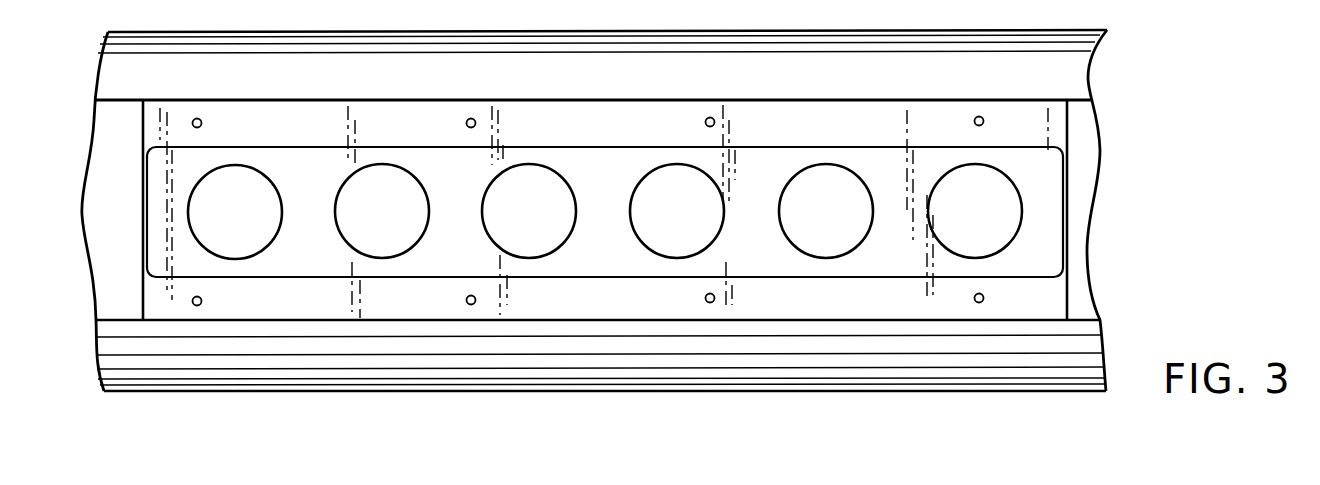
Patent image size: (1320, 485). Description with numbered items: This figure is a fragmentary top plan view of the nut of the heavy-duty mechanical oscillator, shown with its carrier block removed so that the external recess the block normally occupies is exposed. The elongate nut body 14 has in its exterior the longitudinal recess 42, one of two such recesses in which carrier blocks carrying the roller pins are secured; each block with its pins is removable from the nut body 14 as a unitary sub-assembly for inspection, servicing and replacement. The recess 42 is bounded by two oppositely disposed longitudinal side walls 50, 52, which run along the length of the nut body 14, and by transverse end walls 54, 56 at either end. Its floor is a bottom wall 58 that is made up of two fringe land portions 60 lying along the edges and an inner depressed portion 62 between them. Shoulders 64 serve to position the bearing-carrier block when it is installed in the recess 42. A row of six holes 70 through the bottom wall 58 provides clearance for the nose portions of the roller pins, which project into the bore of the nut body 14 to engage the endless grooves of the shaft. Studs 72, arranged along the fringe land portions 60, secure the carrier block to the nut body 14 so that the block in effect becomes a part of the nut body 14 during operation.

The nut body 14 is at (470, 40).
The longitudinal recess 42 is at (587, 128).
The longitudinal side wall 50 is at (858, 100).
The longitudinal side wall 52 is at (848, 322).
The transverse end wall 54 is at (145, 226).
The transverse end wall 56 is at (1062, 203).
The bottom wall 58 is at (911, 249).
The fringe land portions 60 is at (764, 119).
The inner depressed portion 62 is at (593, 250).
The shoulders 64 is at (270, 147).
The holes 70 is at (493, 230).
The studs 72 is at (467, 118).